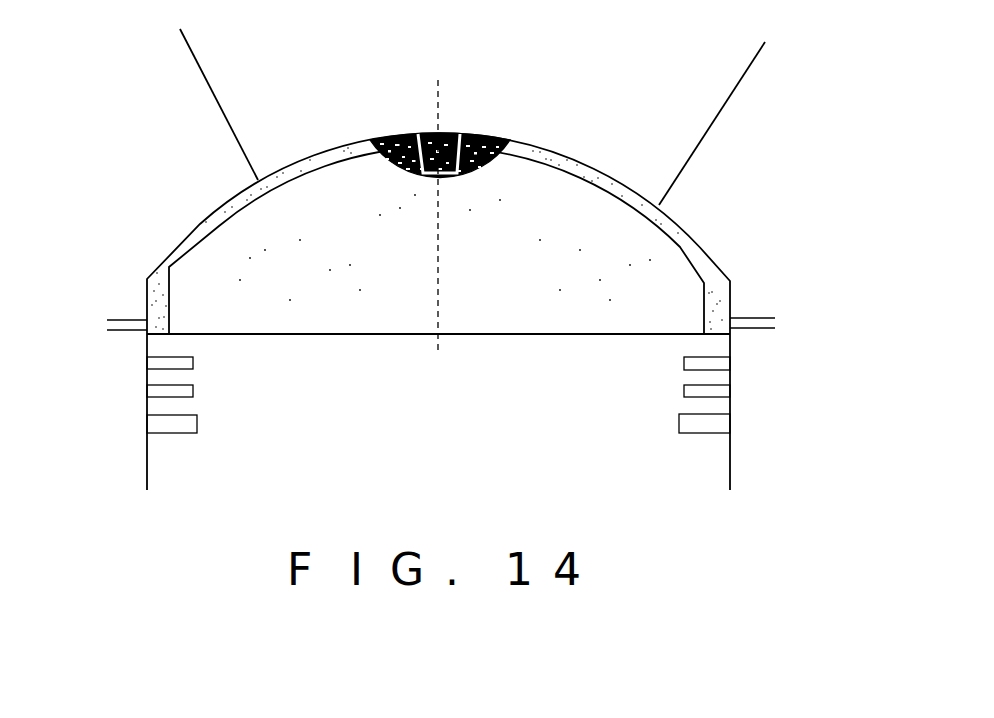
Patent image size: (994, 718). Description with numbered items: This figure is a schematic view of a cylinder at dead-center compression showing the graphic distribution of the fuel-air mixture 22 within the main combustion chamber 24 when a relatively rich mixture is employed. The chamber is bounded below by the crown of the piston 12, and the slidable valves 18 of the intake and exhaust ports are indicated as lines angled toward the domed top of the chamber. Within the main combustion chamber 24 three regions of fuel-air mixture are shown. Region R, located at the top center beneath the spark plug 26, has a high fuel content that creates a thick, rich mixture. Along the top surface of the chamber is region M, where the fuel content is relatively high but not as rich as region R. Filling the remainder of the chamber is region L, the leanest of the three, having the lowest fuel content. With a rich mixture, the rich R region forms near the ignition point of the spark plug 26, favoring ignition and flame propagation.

The piston 12 is at (645, 452).
The slidable valve 18 is at (200, 70).
The fuel-air mixture 22 is at (290, 243).
The main combustion chamber 24 is at (622, 248).
The spark plug 26 is at (447, 133).
The region M is at (292, 168).
The region R is at (475, 137).
The region L is at (473, 215).